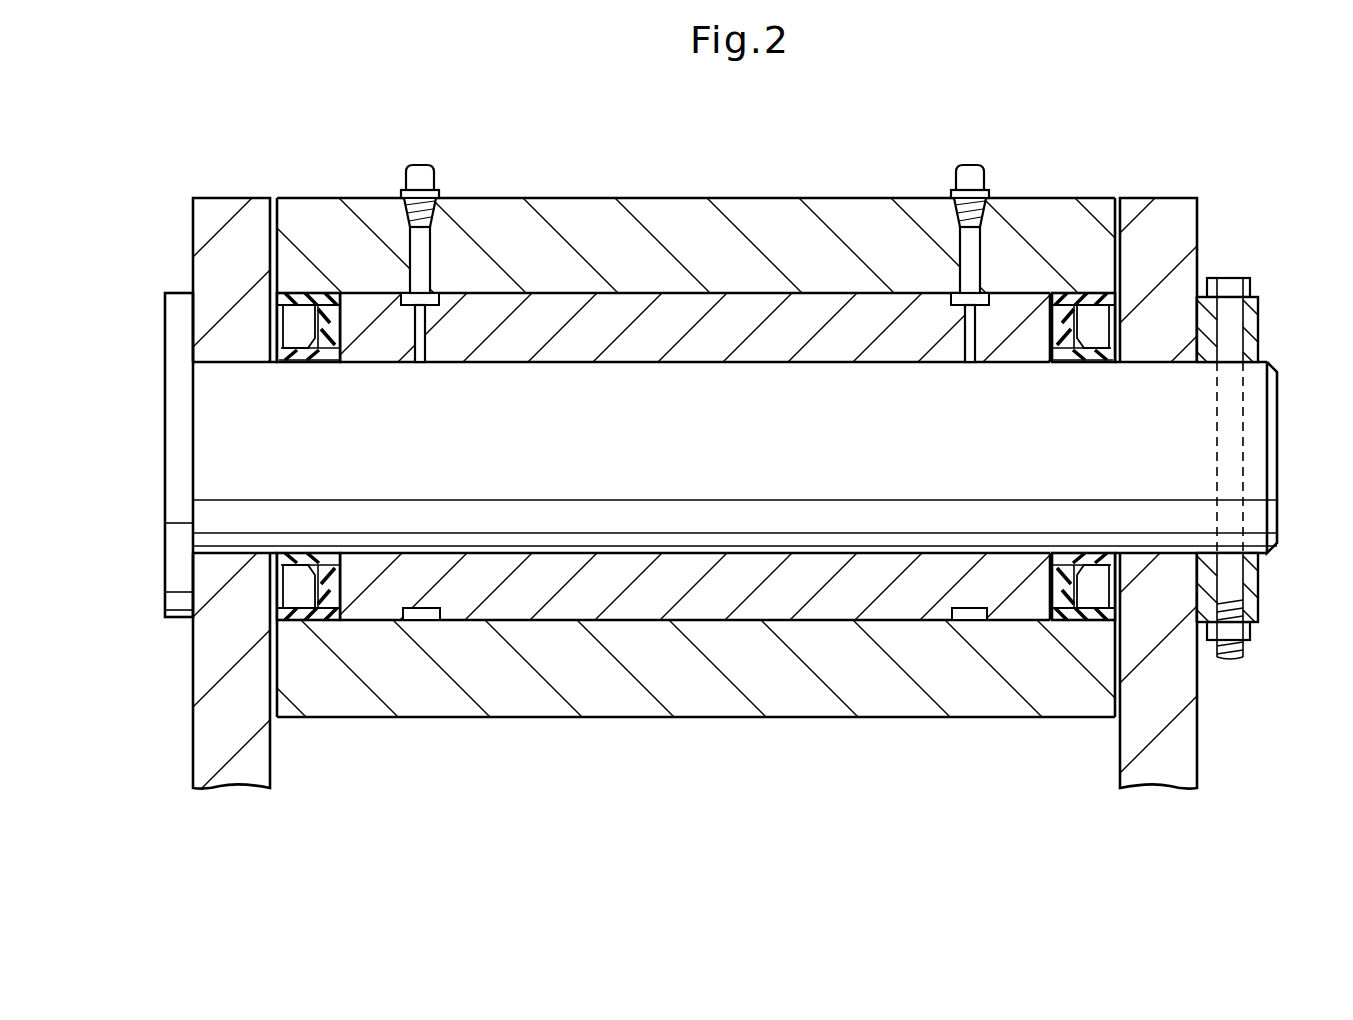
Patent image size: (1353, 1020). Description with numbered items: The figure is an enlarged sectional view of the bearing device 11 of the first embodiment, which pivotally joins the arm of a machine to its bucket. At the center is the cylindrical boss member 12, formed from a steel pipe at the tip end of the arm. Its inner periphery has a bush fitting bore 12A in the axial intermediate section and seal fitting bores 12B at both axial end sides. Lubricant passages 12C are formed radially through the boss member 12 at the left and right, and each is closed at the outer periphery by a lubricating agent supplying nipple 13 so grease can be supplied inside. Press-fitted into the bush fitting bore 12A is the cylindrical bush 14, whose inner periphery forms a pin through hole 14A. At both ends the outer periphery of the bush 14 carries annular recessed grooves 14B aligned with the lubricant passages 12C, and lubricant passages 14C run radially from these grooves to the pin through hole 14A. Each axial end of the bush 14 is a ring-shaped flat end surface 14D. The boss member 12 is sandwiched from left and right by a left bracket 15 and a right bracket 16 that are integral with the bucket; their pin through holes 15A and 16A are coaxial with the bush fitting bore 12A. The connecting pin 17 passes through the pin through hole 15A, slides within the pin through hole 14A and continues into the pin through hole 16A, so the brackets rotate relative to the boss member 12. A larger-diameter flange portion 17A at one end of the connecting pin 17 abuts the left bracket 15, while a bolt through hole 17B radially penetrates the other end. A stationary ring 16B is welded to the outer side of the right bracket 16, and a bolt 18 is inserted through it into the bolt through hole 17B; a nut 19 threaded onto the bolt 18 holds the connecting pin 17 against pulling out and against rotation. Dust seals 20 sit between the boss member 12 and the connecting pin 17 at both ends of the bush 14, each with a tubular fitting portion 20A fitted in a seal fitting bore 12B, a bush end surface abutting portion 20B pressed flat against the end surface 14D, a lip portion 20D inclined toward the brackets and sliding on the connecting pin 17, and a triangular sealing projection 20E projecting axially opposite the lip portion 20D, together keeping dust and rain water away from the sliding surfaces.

The bearing device 11 is at (648, 192).
The boss member 12 is at (738, 218).
The bush fitting bore 12A is at (712, 620).
The seal fitting bore 12B is at (280, 597).
The lubricant passage 12C is at (423, 252).
The lubricating agent supplying nipple 13 is at (413, 165).
The bush 14 is at (785, 597).
The pin through hole 14A is at (653, 553).
The recessed groove 14B is at (423, 612).
The lubricant passage 14C is at (423, 322).
The end surface 14D is at (303, 610).
The left bracket 15 is at (227, 242).
The pin through hole 15A is at (223, 362).
The right bracket 16 is at (1170, 243).
The pin through hole 16A is at (1153, 364).
The stationary ring 16B is at (1250, 572).
The connecting pin 17 is at (850, 510).
The flange portion 17A is at (178, 457).
The bolt through hole 17B is at (1240, 467).
The bolt 18 is at (1243, 288).
The nut 19 is at (1240, 632).
The dust seal 20 is at (305, 282).
The tubular fitting portion 20A is at (273, 295).
The bush end surface abutting portion 20B is at (360, 293).
The lip portion 20D is at (288, 336).
The sealing projection 20E is at (337, 557).